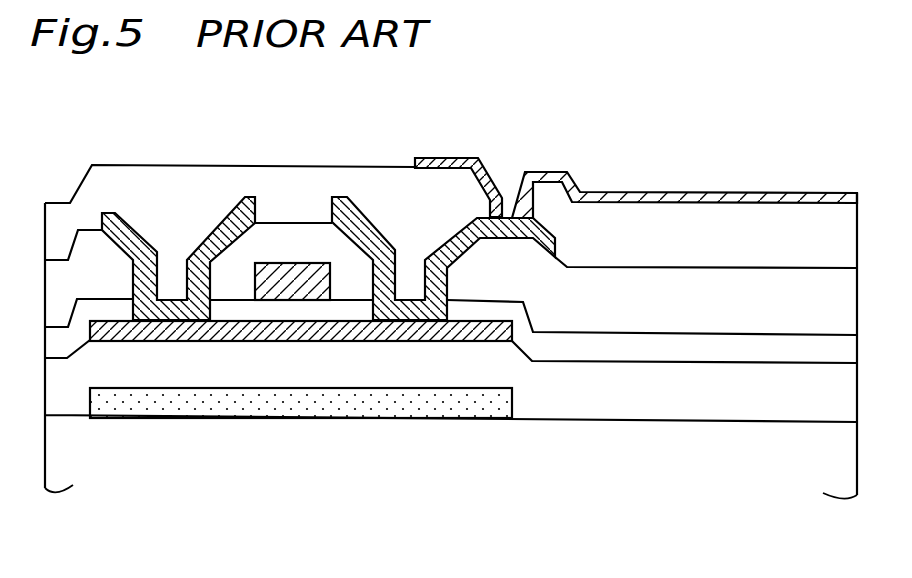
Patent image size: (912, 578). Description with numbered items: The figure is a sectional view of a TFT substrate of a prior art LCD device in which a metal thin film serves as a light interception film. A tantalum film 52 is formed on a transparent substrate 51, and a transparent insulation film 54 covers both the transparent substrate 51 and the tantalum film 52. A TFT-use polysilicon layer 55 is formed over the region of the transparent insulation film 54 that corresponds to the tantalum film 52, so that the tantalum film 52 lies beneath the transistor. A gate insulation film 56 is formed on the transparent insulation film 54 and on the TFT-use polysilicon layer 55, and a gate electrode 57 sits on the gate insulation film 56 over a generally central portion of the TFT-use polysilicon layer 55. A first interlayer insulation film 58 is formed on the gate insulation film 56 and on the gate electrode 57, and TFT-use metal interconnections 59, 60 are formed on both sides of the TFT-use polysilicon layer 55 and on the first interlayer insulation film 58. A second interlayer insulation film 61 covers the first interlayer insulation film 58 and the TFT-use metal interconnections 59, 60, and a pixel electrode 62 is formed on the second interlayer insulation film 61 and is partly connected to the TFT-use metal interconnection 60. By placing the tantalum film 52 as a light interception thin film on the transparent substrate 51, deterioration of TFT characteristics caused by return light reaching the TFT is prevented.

The transparent substrate 51 is at (595, 450).
The tantalum film 52 is at (270, 412).
The transparent insulation film 54 is at (712, 403).
The TFT-use polysilicon layer 55 is at (178, 332).
The gate insulation film 56 is at (788, 353).
The gate electrode 57 is at (312, 283).
The first interlayer insulation film 58 is at (705, 293).
The TFT-use metal interconnection 59 is at (138, 228).
The TFT-use metal interconnection 60 is at (362, 214).
The second interlayer insulation film 61 is at (627, 230).
The pixel electrode 62 is at (478, 166).